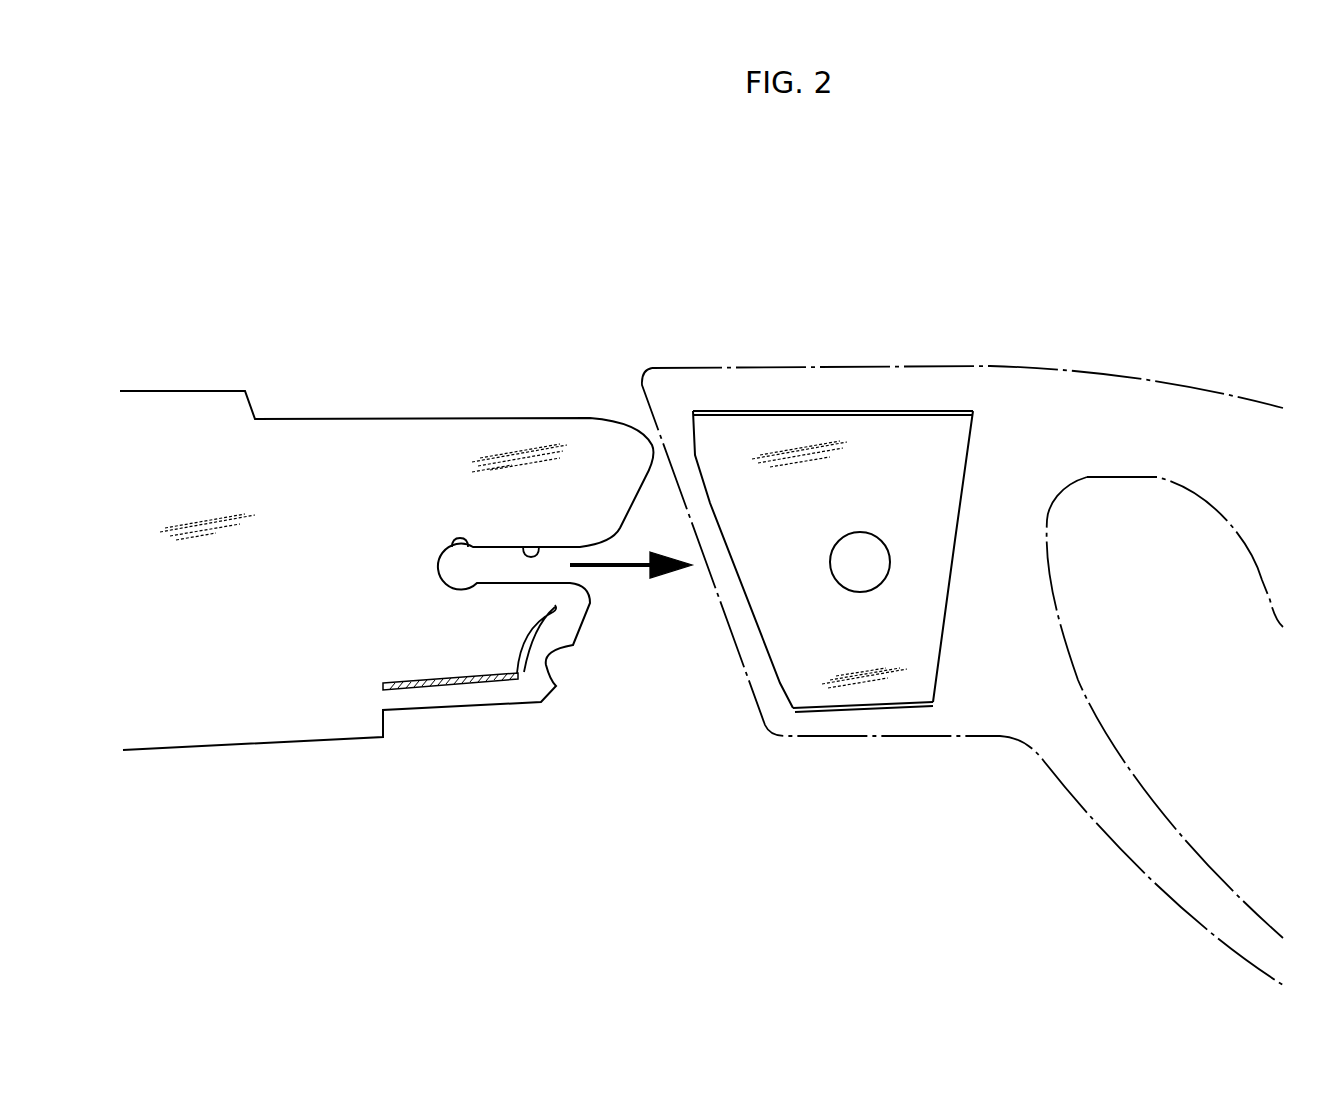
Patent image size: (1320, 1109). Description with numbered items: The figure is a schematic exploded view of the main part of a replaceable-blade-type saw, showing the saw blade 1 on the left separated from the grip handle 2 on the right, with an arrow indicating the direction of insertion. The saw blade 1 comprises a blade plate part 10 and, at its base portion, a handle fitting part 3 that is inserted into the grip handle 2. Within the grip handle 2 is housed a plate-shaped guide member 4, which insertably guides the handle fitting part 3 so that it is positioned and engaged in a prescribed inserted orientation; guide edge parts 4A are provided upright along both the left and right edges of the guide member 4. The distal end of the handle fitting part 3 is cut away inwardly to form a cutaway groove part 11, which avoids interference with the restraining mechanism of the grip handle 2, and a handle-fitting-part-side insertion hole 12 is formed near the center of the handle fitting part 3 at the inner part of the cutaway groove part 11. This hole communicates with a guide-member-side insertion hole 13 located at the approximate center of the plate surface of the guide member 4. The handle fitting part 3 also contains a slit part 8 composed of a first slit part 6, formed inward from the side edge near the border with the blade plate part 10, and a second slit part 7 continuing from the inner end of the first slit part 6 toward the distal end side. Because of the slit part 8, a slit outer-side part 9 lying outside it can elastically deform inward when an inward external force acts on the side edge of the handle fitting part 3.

The saw blade 1 is at (187, 757).
The grip handle 2 is at (1080, 357).
The handle fitting part 3 is at (403, 450).
The guide member 4 is at (932, 488).
The guide edge part 4A is at (835, 412).
The first slit part 6 is at (387, 697).
The second slit part 7 is at (478, 676).
The slit part 8 is at (440, 678).
The slit outer-side part 9 is at (460, 697).
The blade plate part 10 is at (263, 717).
The cutaway groove part 11 is at (538, 547).
The handle-fitting-part-side insertion hole 12 is at (452, 546).
The guide-member-side insertion hole 13 is at (850, 580).